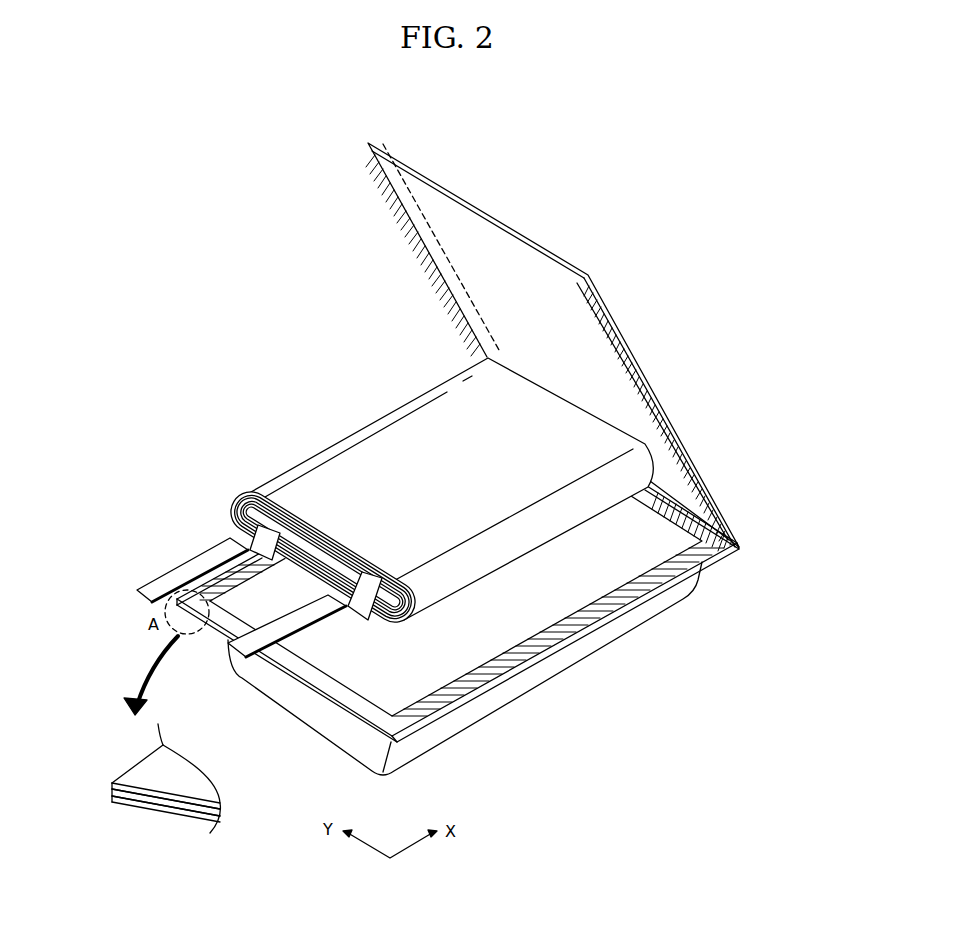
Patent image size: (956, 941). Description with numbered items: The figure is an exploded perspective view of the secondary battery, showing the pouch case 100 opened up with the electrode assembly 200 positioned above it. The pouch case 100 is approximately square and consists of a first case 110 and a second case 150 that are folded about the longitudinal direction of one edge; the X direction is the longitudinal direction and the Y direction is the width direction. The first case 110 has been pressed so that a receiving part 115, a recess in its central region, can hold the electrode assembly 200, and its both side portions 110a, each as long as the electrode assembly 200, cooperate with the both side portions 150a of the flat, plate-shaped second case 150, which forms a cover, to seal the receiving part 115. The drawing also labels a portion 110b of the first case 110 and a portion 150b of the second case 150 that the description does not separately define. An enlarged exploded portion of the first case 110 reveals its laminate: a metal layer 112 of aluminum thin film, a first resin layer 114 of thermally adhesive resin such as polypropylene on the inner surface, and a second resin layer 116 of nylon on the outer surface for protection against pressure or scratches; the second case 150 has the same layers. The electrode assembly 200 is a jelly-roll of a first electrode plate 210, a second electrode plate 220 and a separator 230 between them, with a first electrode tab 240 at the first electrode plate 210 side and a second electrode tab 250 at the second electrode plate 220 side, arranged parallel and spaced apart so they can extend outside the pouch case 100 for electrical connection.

The pouch case 100 is at (792, 482).
The first case 110 is at (483, 632).
The both side portions of the first case 110a is at (488, 682).
The accommodating side wall of case body 110b is at (312, 694).
The metal layer 112 is at (112, 794).
The first resin layer 114 is at (112, 785).
The receiving part 115 is at (604, 651).
The second resin layer 116 is at (112, 803).
The second case 150 is at (577, 345).
The both side portions of the second case 150a is at (603, 310).
The upper edge of cover 150b is at (485, 208).
The electrode assembly 200 is at (411, 490).
The first electrode plate 210 is at (233, 510).
The second electrode plate 220 is at (250, 500).
The separator 230 is at (237, 496).
The first electrode tab 240 is at (230, 652).
The second electrode tab 250 is at (137, 593).